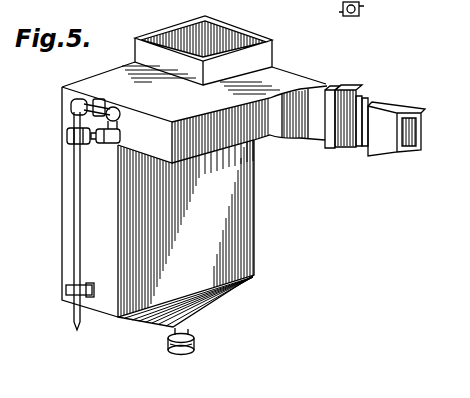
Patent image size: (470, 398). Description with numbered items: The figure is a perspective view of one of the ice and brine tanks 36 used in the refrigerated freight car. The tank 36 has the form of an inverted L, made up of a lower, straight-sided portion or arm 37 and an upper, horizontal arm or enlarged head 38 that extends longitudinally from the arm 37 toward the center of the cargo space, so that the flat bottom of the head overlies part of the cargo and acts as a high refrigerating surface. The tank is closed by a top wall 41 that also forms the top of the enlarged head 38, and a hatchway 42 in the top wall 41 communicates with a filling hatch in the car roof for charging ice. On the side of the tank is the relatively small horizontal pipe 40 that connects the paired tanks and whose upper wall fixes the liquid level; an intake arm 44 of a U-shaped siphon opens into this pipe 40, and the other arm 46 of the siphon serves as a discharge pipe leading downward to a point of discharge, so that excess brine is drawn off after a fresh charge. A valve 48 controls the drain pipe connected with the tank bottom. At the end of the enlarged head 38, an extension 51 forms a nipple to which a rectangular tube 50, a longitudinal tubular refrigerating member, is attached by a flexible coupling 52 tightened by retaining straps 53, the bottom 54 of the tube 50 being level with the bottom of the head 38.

The tank 36 is at (256, 187).
The lower straight-sided portion or arm 37 is at (243, 244).
The enlarged head 38 is at (268, 131).
The horizontal pipe 40 is at (107, 143).
The top wall 41 is at (260, 90).
The hatchway 42 is at (256, 35).
The intake arm 44 is at (117, 126).
The discharge arm 46 is at (75, 164).
The valve 48 is at (362, 8).
The rectangular tube 50 is at (372, 152).
The extension 51 is at (326, 82).
The flexible coupling 52 is at (363, 93).
The retaining strap 53 is at (372, 103).
The bottom 54 is at (411, 153).